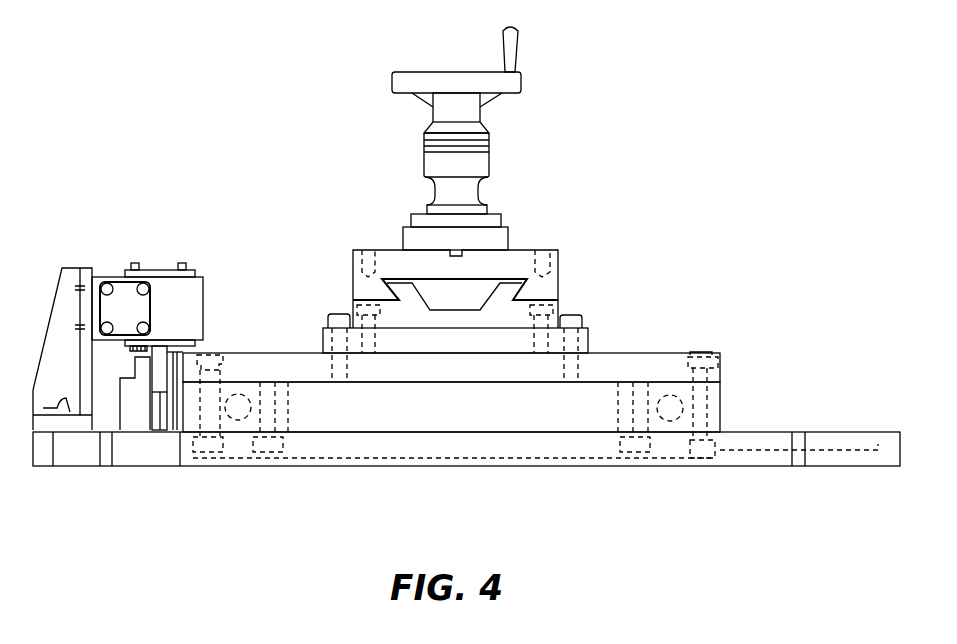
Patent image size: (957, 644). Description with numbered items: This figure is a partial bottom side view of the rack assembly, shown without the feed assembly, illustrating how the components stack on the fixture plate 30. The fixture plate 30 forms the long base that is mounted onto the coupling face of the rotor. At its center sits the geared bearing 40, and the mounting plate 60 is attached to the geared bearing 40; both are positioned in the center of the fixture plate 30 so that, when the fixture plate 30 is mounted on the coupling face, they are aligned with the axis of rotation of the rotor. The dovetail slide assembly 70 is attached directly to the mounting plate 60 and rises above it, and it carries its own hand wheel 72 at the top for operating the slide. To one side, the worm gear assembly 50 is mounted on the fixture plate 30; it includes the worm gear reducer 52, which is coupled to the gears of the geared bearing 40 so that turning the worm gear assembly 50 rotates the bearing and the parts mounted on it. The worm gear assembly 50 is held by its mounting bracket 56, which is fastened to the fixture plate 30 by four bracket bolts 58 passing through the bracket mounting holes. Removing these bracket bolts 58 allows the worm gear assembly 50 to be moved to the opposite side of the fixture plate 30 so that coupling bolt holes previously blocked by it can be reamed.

The fixture plate 30 is at (752, 467).
The geared bearing 40 is at (510, 422).
The worm gear assembly 50 is at (110, 280).
The worm gear reducer 52 is at (160, 270).
The mounting bracket 56 is at (55, 291).
The bracket bolts 58 is at (64, 400).
The mounting plate 60 is at (620, 353).
The dovetail slide assembly 70 is at (520, 247).
The hand wheel 72 is at (398, 80).